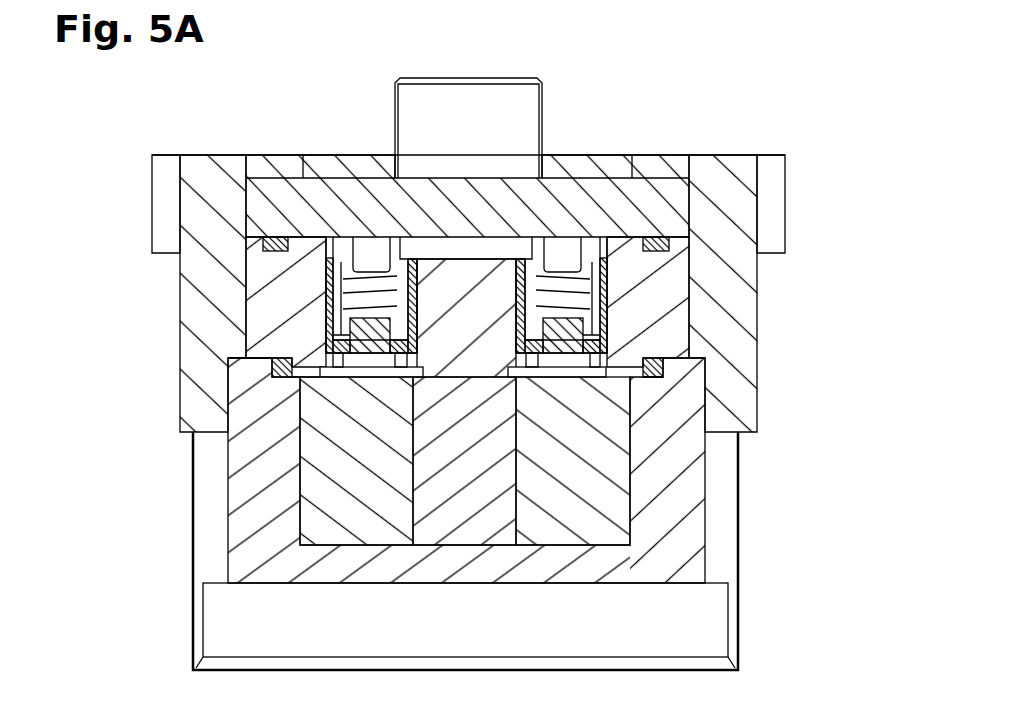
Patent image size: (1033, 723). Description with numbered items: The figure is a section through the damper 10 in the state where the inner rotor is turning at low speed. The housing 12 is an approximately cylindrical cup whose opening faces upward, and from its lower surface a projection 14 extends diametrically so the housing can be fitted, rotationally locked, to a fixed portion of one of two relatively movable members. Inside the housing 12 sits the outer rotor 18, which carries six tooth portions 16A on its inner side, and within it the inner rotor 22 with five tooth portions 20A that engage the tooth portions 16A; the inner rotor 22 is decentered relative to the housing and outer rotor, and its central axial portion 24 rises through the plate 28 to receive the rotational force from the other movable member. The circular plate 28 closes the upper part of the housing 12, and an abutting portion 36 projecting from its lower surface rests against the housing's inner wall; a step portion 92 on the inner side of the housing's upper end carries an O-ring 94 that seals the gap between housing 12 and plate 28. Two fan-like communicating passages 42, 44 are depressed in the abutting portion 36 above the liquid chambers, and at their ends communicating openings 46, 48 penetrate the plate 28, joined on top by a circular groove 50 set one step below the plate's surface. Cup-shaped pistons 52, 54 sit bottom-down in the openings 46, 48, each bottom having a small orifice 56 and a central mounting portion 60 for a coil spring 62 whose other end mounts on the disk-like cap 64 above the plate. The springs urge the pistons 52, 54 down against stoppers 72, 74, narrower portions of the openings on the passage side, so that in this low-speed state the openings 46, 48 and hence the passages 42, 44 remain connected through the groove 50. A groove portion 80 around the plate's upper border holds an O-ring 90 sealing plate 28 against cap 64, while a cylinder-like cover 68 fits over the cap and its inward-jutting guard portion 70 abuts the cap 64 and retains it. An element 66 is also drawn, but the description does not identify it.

The damper 10 is at (771, 76).
The housing 12 is at (754, 482).
The projection 14 is at (710, 617).
The tooth portions 16A is at (577, 522).
The outer rotor 18 is at (641, 492).
The tooth portions 20A is at (463, 522).
The inner rotor 22 is at (560, 97).
The axial portion 24 is at (394, 95).
The plate 28 is at (702, 319).
The abutting portion 36 is at (706, 408).
The communicating passage 42 is at (330, 400).
The communicating passage 44 is at (650, 449).
The communicating opening 46 is at (400, 257).
The communicating opening 48 is at (529, 257).
The circular groove 50 is at (445, 244).
The piston 52 is at (325, 303).
The piston 54 is at (607, 342).
The orifice 56 is at (400, 342).
The mounting portion 60 is at (417, 321).
The coil spring 62 is at (328, 283).
The cap 64 is at (683, 196).
The upper seal 66 is at (368, 254).
The cover 68 is at (792, 146).
The guard portion 70 is at (640, 165).
The stopper 72 is at (325, 338).
The stopper 74 is at (703, 355).
The groove portion 80 is at (758, 254).
The O-ring 90 is at (703, 213).
The step portion 92 is at (268, 366).
The O-ring 94 is at (668, 377).